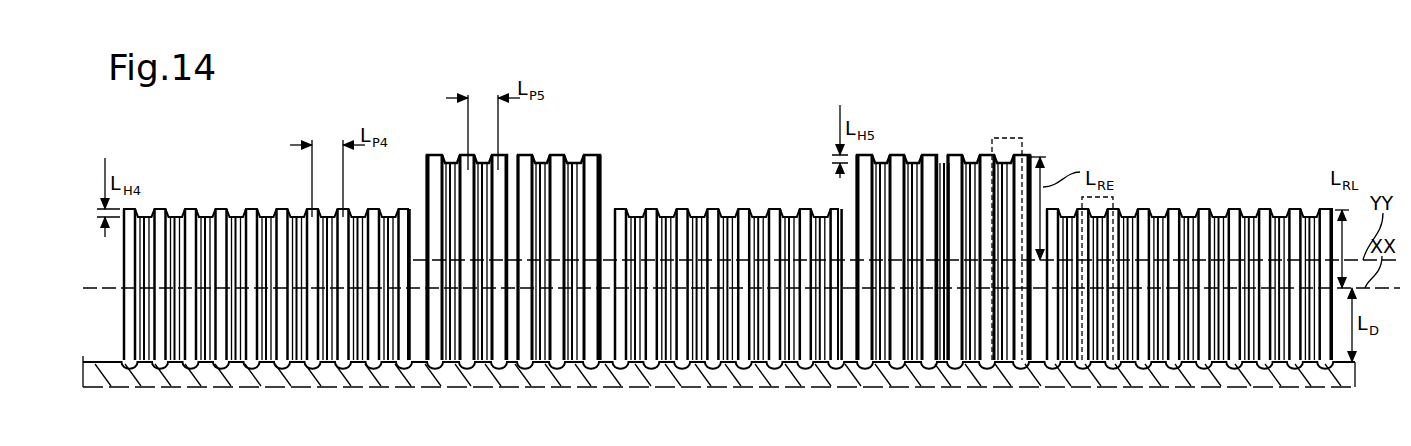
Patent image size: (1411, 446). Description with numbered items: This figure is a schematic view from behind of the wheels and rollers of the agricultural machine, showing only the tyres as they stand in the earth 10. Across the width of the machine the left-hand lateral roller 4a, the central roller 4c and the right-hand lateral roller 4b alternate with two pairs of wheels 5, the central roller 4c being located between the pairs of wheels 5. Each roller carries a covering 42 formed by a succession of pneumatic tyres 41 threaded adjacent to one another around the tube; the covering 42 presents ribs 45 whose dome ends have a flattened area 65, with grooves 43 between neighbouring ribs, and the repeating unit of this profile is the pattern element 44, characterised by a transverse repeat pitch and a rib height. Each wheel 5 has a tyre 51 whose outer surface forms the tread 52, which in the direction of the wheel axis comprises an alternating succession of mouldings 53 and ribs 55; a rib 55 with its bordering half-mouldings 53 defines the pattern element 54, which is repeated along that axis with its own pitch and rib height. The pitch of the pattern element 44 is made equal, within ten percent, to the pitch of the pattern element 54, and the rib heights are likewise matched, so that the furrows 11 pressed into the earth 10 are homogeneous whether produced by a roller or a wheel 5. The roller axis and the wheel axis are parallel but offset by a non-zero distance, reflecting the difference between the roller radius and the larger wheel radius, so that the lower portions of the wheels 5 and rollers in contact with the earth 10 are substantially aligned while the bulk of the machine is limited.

The wheel 5 is at (440, 82).
The earth 10 is at (110, 378).
The furrow 11 is at (1290, 340).
The pneumatic tyre 41 is at (190, 207).
The covering 42 is at (728, 236).
The groove 43 is at (360, 210).
The pattern element 44 is at (1095, 377).
The rib 45 is at (218, 210).
The left-hand lateral roller 4a is at (265, 203).
The right-hand lateral roller 4b is at (1237, 188).
The central roller 4c is at (713, 187).
The tyre 51 is at (424, 178).
The tread 52 is at (742, 187).
The moulding 53 is at (450, 155).
The pattern element 54 is at (1003, 377).
The rib 55 is at (500, 180).
The flattened area 65 is at (253, 208).